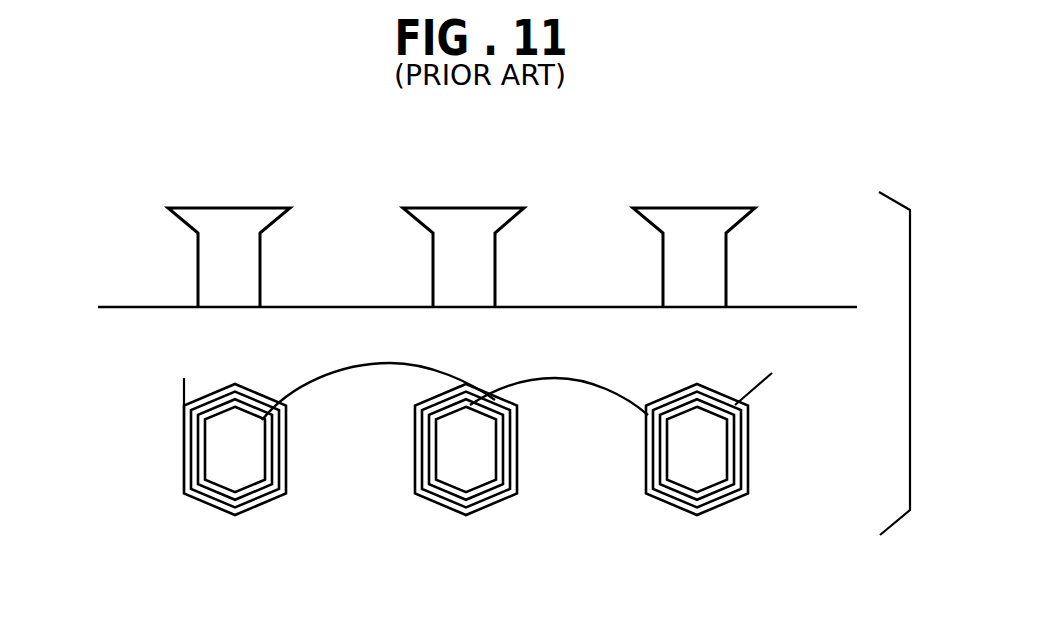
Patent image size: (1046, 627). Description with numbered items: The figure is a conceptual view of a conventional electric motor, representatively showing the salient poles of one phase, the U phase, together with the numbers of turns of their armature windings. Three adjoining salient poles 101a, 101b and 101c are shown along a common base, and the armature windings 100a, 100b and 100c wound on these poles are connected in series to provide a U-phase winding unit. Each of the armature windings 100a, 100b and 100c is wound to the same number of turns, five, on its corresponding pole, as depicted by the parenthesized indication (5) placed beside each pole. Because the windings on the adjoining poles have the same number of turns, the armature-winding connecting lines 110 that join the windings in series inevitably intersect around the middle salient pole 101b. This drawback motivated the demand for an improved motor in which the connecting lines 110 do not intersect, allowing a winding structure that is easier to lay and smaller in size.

The number of turns 5 is at (477, 288).
The salient pole 101a is at (230, 208).
The middle salient pole 101b is at (462, 208).
The salient pole 101c is at (692, 208).
The armature winding 100a is at (283, 473).
The armature winding 100b is at (518, 476).
The armature winding 100c is at (748, 475).
The armature-winding connecting line 110 is at (365, 363).